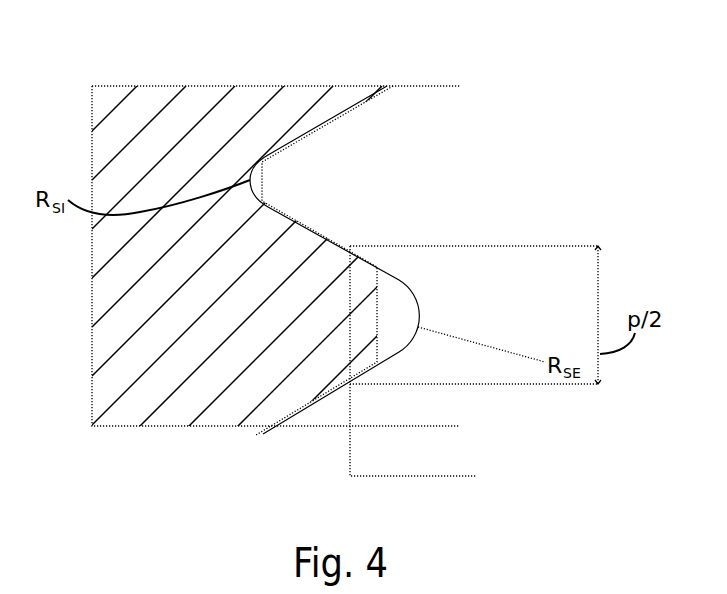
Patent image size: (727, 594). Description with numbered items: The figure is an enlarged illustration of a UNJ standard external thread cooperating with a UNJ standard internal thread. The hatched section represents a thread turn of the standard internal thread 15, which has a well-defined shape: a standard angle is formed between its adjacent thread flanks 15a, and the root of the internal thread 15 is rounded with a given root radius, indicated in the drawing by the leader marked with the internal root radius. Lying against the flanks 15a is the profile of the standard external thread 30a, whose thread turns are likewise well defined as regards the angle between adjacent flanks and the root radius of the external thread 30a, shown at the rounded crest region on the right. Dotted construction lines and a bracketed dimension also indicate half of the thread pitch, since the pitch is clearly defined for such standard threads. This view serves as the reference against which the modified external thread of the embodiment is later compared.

The standard internal thread 15 is at (193, 143).
The thread flanks 15a is at (300, 223).
The standard external thread 30a is at (393, 87).